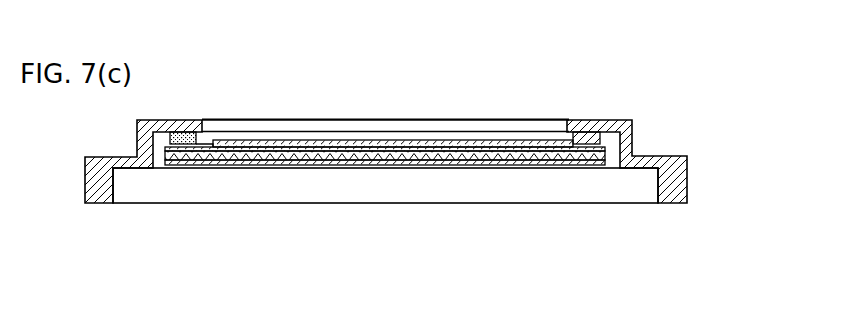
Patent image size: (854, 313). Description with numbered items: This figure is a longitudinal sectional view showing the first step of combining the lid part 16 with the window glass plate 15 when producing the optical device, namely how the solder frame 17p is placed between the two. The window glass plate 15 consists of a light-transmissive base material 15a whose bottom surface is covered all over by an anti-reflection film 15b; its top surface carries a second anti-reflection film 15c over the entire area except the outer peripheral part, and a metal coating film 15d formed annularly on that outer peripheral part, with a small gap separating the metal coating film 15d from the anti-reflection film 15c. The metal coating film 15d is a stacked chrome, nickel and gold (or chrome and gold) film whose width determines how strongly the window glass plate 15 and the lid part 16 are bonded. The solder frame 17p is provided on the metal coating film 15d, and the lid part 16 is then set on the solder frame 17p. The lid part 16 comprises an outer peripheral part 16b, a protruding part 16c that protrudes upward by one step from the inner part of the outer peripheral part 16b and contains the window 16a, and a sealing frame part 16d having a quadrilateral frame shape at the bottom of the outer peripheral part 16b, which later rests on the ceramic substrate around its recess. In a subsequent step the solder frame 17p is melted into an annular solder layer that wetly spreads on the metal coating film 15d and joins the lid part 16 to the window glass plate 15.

The window glass plate 15 is at (385, 174).
The light-transmissive base material 15a is at (253, 163).
The anti-reflection film 15b is at (293, 163).
The anti-reflection film 15c is at (337, 163).
The metal coating film 15d is at (168, 140).
The lid part 16 is at (727, 58).
The window 16a is at (553, 128).
The outer peripheral part 16b is at (658, 156).
The protruding part 16c is at (608, 120).
The sealing frame part 16d is at (703, 167).
The solder frame 17p is at (556, 131).